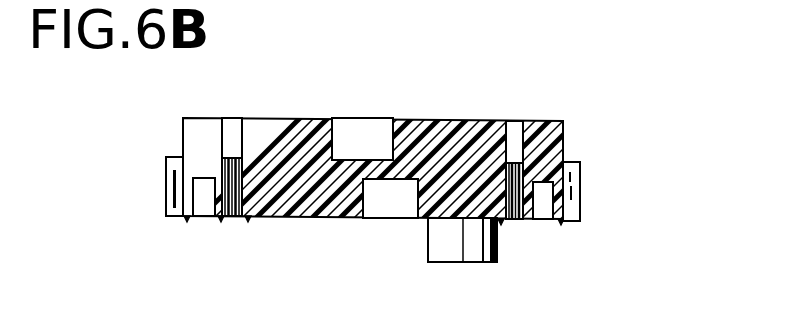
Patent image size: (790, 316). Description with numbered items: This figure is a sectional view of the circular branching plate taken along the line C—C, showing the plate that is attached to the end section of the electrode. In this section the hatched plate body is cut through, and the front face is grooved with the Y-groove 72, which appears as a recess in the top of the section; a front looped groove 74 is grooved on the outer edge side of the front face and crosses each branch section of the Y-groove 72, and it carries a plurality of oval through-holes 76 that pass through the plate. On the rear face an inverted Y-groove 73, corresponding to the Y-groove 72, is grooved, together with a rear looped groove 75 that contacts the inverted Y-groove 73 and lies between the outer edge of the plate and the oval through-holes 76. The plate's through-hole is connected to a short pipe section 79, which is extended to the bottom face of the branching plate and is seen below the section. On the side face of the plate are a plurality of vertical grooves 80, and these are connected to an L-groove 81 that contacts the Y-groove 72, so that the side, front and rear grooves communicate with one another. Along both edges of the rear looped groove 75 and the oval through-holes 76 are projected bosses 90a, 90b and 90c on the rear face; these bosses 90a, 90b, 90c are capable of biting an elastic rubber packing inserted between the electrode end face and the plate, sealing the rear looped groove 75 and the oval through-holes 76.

The Y-groove 72 is at (362, 130).
The inverted Y-groove 73 is at (376, 212).
The front looped groove 74 is at (512, 130).
The rear looped groove 75 is at (201, 213).
The oval through-holes 76 is at (563, 147).
The short pipe section 79 is at (437, 243).
The vertical grooves 80 is at (173, 204).
The L-groove 81 is at (168, 148).
The boss 90a is at (558, 223).
The boss 90b is at (531, 224).
The boss 90c is at (502, 223).